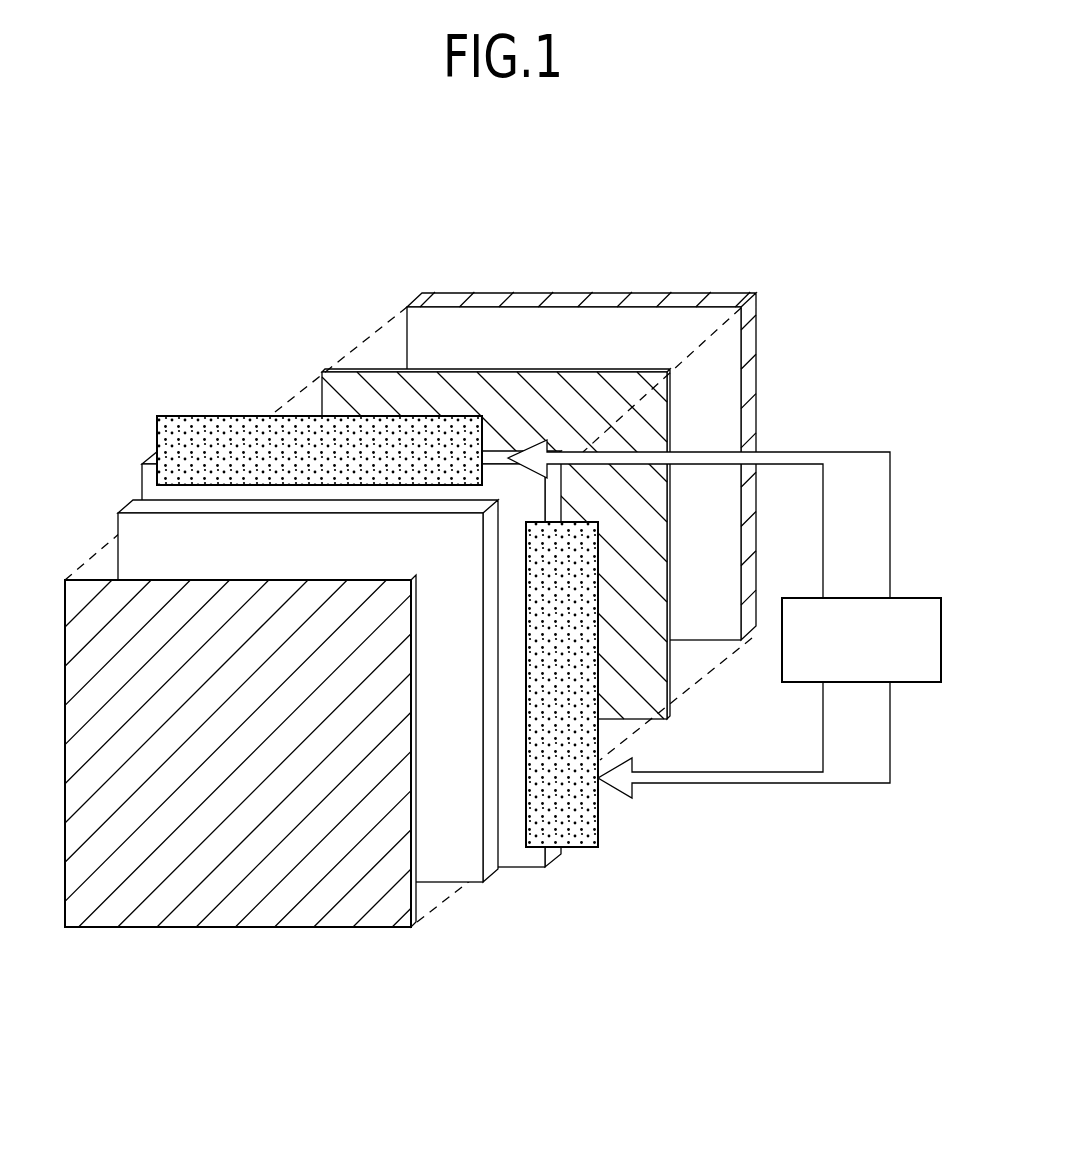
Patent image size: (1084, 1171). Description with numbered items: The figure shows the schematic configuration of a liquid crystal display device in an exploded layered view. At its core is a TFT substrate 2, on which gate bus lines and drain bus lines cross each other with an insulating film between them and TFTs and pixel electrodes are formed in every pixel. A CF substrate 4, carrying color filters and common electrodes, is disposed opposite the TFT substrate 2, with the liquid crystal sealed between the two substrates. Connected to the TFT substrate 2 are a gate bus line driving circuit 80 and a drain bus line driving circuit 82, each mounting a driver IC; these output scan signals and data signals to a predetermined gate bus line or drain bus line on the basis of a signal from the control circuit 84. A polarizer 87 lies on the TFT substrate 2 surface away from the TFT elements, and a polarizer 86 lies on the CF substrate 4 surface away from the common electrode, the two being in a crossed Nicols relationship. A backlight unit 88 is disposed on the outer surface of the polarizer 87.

The TFT substrate 2 is at (520, 867).
The CF substrate 4 is at (477, 882).
The gate bus line driving circuit 80 is at (590, 832).
The drain bus line driving circuit 82 is at (210, 425).
The control circuit 84 is at (935, 597).
The polarizer 86 is at (258, 915).
The polarizer 87 is at (657, 692).
The backlight unit 88 is at (750, 348).